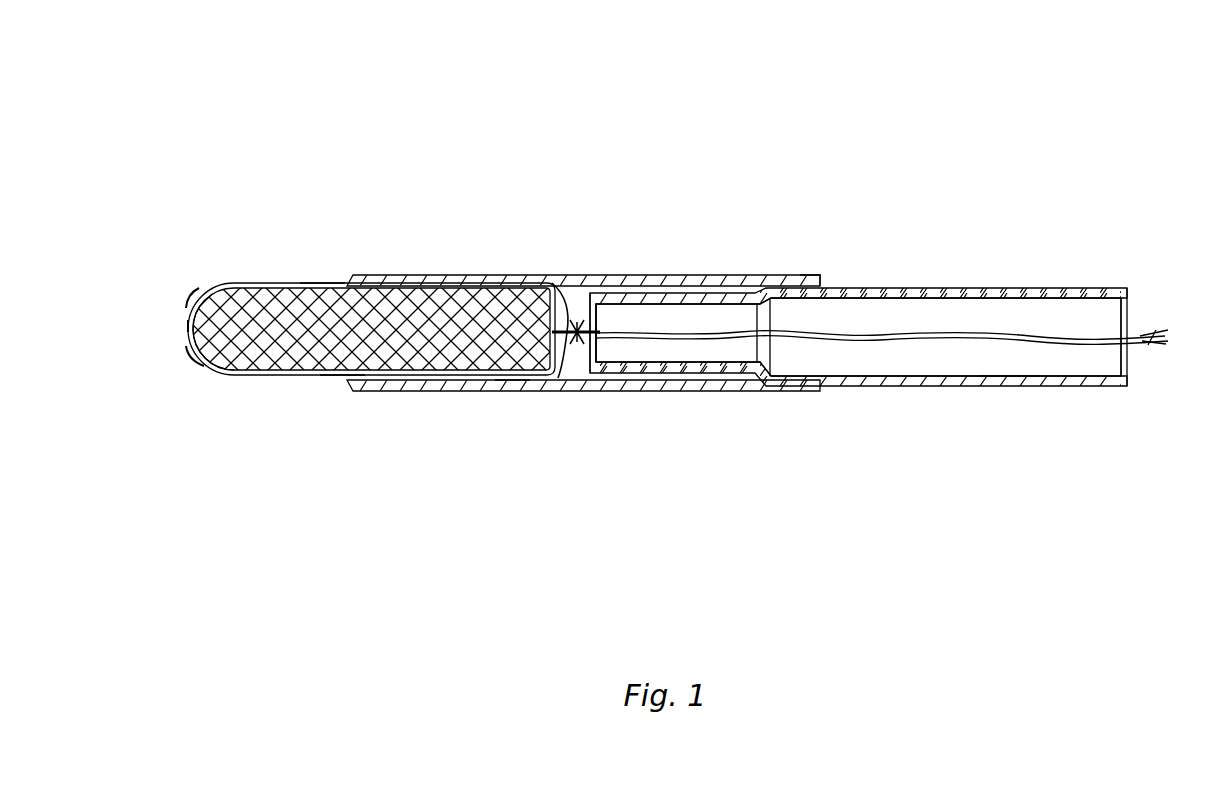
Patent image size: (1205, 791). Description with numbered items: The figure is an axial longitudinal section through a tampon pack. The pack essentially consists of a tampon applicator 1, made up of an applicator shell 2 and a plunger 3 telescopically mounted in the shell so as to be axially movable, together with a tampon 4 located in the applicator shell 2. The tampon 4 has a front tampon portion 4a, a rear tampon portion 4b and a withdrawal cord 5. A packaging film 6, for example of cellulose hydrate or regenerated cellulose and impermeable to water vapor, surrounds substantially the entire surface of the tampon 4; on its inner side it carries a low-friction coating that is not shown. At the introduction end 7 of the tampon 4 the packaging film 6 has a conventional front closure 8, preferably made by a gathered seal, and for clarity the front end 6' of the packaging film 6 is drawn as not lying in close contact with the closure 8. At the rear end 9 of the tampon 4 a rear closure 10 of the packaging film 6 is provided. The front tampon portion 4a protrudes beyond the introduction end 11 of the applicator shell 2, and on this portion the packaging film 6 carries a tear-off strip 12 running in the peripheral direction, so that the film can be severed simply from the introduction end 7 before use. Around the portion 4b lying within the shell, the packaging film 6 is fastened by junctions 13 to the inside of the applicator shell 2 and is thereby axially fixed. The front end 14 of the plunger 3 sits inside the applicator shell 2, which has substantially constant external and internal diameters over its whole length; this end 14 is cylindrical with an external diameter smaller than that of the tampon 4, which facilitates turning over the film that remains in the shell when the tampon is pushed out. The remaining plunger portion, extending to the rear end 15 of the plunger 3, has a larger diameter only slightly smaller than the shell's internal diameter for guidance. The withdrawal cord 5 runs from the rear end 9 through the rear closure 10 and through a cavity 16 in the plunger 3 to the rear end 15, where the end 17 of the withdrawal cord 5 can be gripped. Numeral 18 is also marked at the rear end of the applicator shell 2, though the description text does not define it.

The tampon applicator 1 is at (845, 383).
The applicator shell 2 is at (685, 283).
The plunger 3 is at (913, 293).
The tampon 4 is at (410, 285).
The front tampon portion 4a is at (235, 347).
The rear tampon portion 4b is at (463, 335).
The withdrawal cord 5 is at (950, 340).
The packaging film 6 is at (371, 213).
The front end of the packaging film 6' is at (208, 213).
The introduction end of the tampon 7 is at (209, 342).
The front closure 8 is at (188, 325).
The rear end of the tampon 9 is at (545, 290).
The rear closure 10 is at (572, 340).
The introduction end of the applicator shell 11 is at (342, 383).
The tear-off strip 12 is at (323, 284).
The junctions 13 is at (513, 380).
The front end of the plunger 14 is at (574, 334).
The rear end of the plunger 15 is at (1125, 292).
The cavity 16 is at (1008, 365).
The end of the withdrawal cord 17 is at (1162, 323).
The sleeve rear end 18 is at (822, 288).